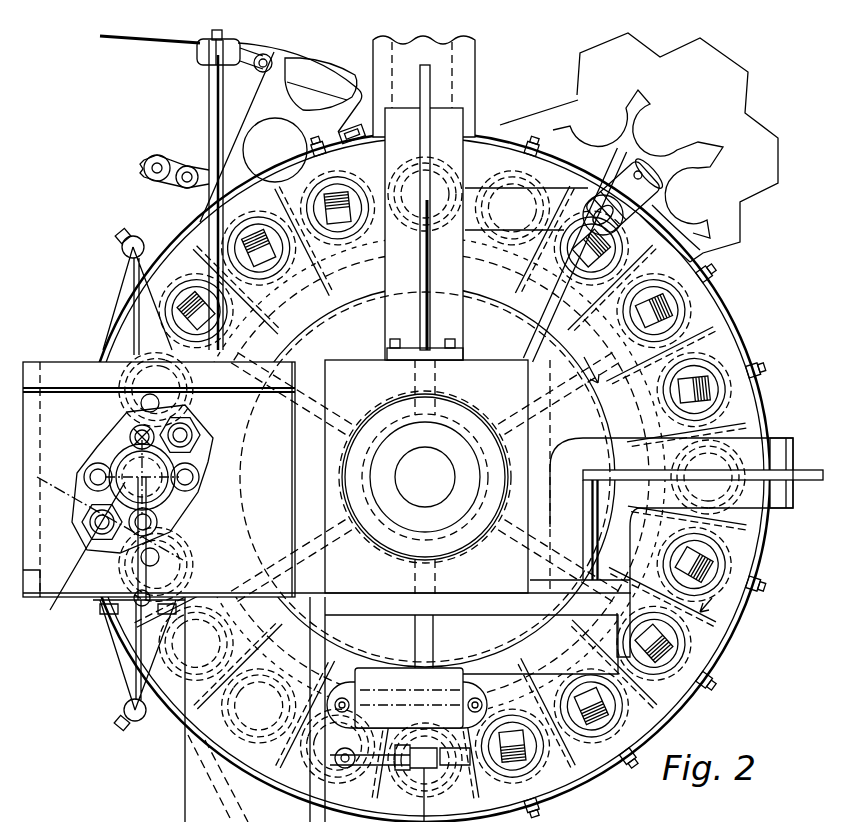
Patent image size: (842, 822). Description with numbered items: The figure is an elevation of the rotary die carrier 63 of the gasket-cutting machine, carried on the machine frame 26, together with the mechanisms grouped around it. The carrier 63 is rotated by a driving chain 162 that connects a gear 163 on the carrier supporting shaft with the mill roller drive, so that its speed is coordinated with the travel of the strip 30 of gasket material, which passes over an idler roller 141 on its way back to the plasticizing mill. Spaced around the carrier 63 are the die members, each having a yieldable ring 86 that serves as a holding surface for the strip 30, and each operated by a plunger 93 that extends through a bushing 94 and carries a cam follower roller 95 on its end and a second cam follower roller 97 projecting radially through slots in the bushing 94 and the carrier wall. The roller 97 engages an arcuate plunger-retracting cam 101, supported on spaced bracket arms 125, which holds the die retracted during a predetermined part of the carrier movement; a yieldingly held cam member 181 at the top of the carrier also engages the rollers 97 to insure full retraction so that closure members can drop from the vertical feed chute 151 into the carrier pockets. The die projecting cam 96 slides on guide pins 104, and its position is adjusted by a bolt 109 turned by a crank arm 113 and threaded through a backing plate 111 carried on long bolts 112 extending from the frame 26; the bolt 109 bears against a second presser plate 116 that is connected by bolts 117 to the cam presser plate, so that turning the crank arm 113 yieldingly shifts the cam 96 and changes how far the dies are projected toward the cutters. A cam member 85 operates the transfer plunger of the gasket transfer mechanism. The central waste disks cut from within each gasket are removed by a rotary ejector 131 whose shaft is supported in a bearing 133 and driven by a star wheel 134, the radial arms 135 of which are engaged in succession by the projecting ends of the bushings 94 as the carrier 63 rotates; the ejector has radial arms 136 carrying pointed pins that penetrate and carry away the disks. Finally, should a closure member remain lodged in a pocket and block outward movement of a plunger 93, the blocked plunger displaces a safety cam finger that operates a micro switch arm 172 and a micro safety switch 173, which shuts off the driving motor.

The frame 26 is at (67, 373).
The strip of gasket material 30 is at (267, 103).
The die carrier 63 is at (593, 753).
The cam member 85 is at (707, 607).
The yieldable ring 86 is at (250, 765).
The plunger 93 is at (320, 316).
The bushing 94 is at (541, 758).
The cam follower rollers 95 is at (518, 761).
The die projecting cam 96 is at (125, 650).
The roller 97 is at (756, 377).
The plunger-retracting cam 101 is at (170, 707).
The guide pins 104 is at (153, 558).
The bolt 109 is at (180, 512).
The backing plate 111 is at (197, 450).
The long bolts 112 is at (107, 538).
The crank arm 113 is at (105, 613).
The second presser plate 116 is at (178, 513).
The bolts 117 is at (192, 477).
The bracket arms 125 is at (797, 495).
The rotary ejector 131 is at (615, 75).
The bearing 133 is at (647, 187).
The star wheel 134 is at (680, 204).
The radial arms 135 is at (693, 233).
The radial arms 136 is at (767, 137).
The idler roller 141 is at (302, 72).
The feed chute 151 is at (467, 63).
The driving chain 162 is at (172, 165).
The gear 163 is at (602, 417).
The micro switch arm 172 is at (418, 767).
The micro safety switch 173 is at (430, 695).
The cam member 181 is at (357, 140).